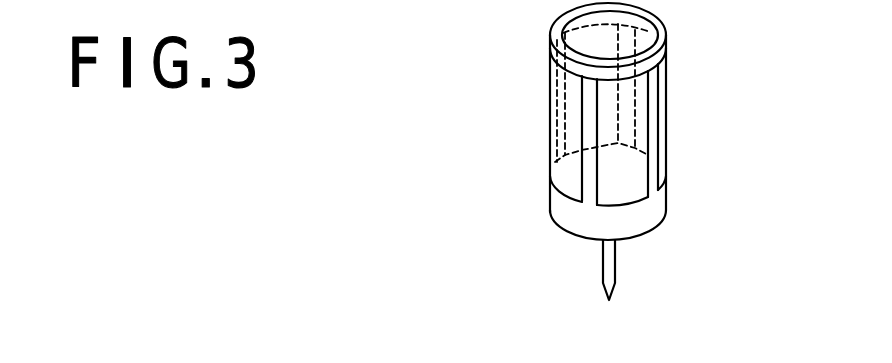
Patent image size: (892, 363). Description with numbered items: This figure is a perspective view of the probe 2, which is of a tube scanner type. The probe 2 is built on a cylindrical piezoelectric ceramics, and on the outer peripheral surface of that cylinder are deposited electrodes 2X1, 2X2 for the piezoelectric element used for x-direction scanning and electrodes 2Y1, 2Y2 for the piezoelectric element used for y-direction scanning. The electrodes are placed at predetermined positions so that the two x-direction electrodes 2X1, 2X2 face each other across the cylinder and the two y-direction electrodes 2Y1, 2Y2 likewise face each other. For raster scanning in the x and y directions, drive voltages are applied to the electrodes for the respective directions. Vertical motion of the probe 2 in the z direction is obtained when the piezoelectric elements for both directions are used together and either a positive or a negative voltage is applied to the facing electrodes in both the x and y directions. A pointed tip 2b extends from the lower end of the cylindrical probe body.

The probe 2 is at (585, 227).
The electrode for x-direction scanning 2X1 is at (667, 130).
The electrode for x-direction scanning 2X2 is at (563, 180).
The electrode for y-direction scanning 2Y1 is at (627, 188).
The electrode for y-direction scanning 2Y2 is at (603, 40).
The probe tip 2b is at (614, 280).